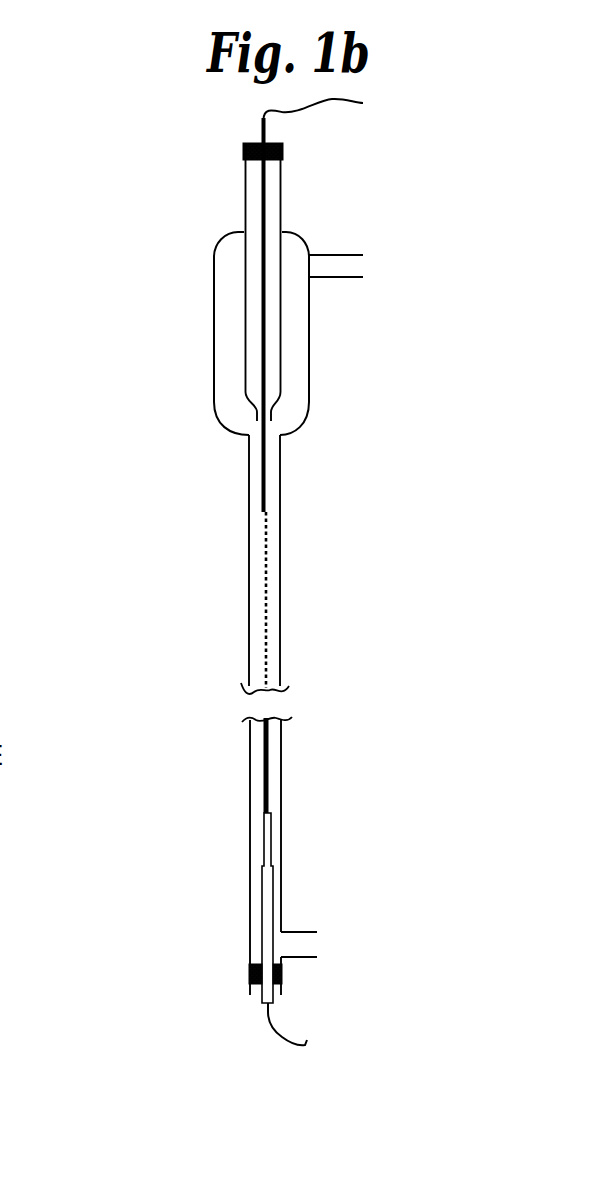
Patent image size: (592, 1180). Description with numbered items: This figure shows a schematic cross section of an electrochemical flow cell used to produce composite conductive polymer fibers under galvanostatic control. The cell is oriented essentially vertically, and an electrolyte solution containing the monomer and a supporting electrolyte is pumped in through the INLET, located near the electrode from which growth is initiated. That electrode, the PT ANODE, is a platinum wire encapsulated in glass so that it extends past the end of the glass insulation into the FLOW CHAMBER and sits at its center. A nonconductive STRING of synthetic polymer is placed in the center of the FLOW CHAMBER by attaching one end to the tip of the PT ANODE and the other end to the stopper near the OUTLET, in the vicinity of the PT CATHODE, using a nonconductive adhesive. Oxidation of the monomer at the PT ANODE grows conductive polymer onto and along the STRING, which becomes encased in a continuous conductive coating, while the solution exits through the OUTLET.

The inlet INLET is at (310, 266).
The Pt anode PT ANODE is at (262, 468).
The string STRING is at (265, 573).
The flow chamber FLOW CHAMBER is at (249, 640).
The Pt cathode PT CATHODE is at (262, 838).
The outlet OUTLET is at (288, 944).